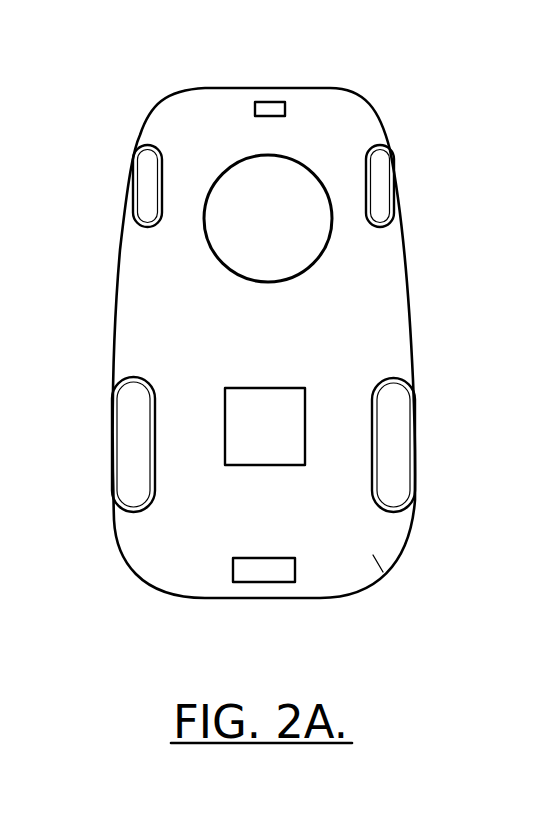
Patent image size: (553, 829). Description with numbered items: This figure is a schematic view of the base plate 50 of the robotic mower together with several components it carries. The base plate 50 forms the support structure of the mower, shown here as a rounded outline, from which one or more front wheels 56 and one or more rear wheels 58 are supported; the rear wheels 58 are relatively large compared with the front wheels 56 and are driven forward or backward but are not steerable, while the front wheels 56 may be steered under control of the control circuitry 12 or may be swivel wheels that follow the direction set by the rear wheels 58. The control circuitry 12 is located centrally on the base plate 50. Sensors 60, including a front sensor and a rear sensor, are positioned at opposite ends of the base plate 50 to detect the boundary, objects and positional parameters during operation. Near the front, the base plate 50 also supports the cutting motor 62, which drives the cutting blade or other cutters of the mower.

The control circuitry 12 is at (260, 418).
The base plate 50 is at (153, 333).
The front wheels 56 is at (145, 173).
The rear wheels 58 is at (140, 437).
The sensors 60 is at (253, 103).
The cutting motor 62 is at (265, 187).